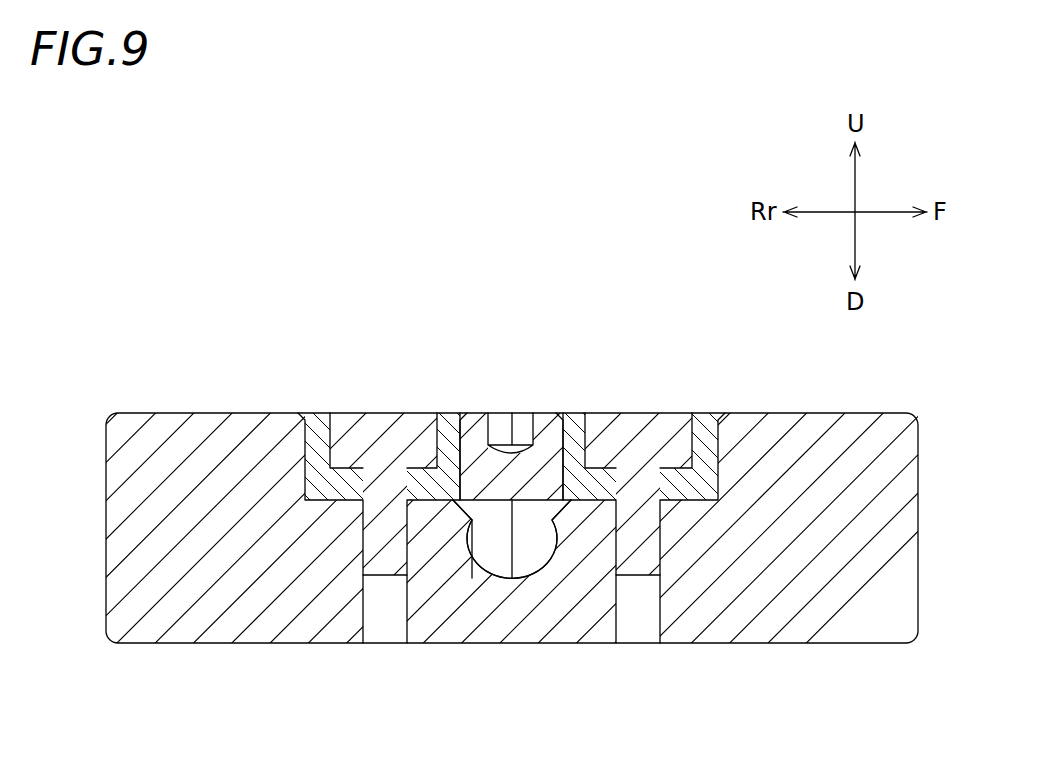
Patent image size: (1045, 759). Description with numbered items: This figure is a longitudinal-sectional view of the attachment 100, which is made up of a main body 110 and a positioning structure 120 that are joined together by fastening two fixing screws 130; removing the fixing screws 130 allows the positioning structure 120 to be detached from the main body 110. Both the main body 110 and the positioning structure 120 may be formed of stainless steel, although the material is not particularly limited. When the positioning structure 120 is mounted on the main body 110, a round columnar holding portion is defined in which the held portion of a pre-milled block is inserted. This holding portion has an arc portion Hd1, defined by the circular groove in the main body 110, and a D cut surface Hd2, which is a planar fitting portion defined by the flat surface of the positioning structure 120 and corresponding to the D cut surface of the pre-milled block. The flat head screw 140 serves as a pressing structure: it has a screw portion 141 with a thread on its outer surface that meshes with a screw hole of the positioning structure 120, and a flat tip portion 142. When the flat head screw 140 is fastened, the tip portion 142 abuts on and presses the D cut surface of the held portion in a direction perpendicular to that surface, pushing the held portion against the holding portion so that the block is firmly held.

The attachment 100 is at (260, 251).
The main body 110 is at (215, 411).
The positioning structure 120 is at (697, 412).
The fixing screw 130 is at (387, 422).
The flat head screw 140 is at (480, 422).
The screw portion 141 is at (580, 438).
The tip portion 142 is at (523, 578).
The arc portion Hd1 is at (515, 565).
The D cut surface Hd2 is at (497, 568).